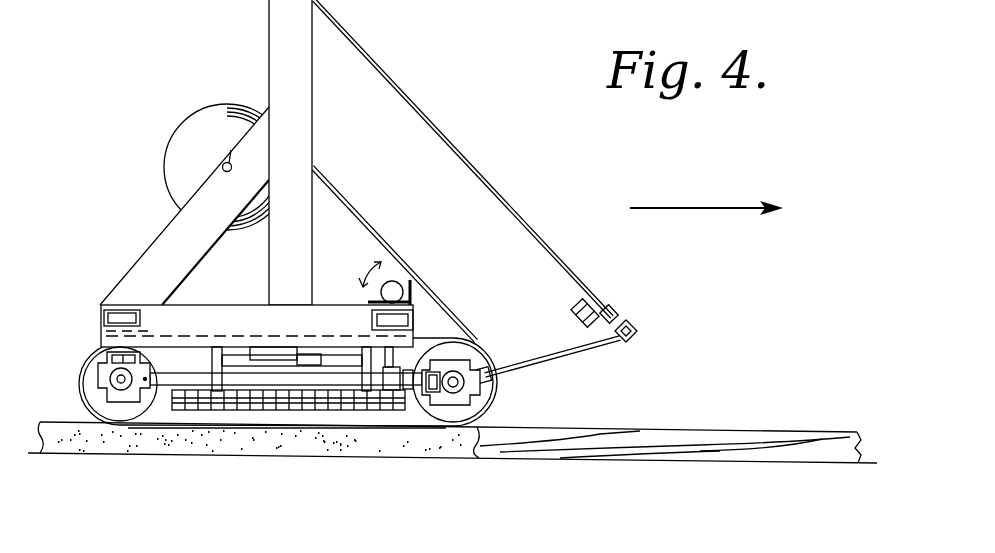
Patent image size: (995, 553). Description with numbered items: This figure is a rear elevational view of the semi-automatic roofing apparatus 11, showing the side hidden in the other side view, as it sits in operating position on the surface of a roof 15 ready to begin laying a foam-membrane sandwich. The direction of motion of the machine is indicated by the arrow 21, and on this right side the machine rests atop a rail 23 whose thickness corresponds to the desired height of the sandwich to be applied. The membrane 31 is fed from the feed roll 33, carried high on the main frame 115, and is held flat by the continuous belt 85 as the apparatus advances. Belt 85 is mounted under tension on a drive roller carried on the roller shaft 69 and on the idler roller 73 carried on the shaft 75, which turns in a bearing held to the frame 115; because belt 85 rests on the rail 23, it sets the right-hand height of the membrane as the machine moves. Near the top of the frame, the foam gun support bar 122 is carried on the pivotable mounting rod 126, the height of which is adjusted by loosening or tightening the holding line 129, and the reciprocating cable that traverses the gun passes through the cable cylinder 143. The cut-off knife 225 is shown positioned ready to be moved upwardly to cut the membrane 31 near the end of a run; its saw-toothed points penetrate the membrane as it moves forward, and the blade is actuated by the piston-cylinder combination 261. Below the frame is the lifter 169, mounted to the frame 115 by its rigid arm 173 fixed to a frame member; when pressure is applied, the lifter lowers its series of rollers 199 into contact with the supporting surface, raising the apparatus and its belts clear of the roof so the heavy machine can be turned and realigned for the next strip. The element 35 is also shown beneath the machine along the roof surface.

The semi-automatic apparatus 11 is at (264, 22).
The feed roll 33 is at (177, 125).
The holding line 129 is at (400, 88).
The membrane 31 is at (352, 208).
The piston-cylinder combination 261 is at (388, 276).
The cut-off knife 225 is at (394, 279).
The main frame 115 is at (272, 281).
The rigid arm 173 is at (290, 365).
The continuous belt 85 is at (420, 335).
The cable cylinder 143 is at (578, 306).
The support bar 122 is at (635, 336).
The pivotable mounting rod 126 is at (597, 349).
The roller shaft 69 is at (110, 378).
The shaft 75 is at (490, 388).
The idler roller 73 is at (61, 412).
The ballast 35 is at (412, 446).
The lifter 169 is at (192, 415).
The rollers 199 is at (274, 409).
The rail 23 is at (776, 433).
The roof 15 is at (876, 462).
The arrow 21 is at (686, 207).